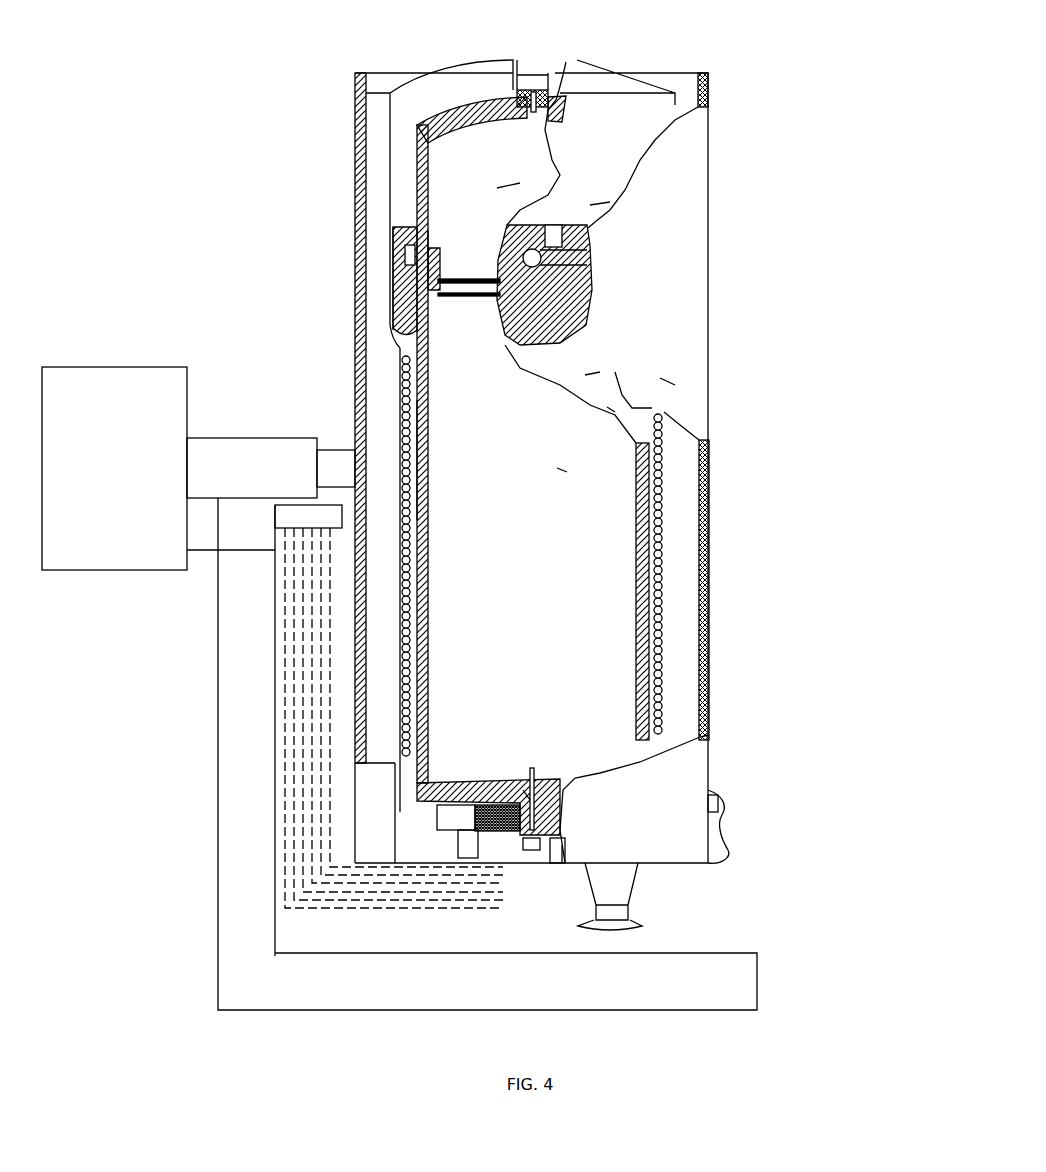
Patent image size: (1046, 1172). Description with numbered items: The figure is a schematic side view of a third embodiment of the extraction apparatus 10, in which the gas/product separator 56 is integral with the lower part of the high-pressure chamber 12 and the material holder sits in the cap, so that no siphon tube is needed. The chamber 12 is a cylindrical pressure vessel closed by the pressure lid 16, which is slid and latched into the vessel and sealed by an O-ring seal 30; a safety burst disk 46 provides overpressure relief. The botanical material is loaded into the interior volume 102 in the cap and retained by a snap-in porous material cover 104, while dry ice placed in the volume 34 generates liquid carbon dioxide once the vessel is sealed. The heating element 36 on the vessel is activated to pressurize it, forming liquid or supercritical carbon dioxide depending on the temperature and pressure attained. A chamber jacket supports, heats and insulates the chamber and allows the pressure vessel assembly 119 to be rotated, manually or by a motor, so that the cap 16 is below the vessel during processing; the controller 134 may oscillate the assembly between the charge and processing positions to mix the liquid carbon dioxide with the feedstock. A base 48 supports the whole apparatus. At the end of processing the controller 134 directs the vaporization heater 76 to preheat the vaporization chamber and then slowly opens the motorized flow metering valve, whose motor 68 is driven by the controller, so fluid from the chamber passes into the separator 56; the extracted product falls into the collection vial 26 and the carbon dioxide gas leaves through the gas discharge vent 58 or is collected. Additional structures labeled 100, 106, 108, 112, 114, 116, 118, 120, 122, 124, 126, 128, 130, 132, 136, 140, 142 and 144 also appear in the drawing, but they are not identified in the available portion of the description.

The extraction apparatus 10 is at (733, 52).
The high-pressure chamber 12 is at (607, 407).
The pressure lid 16 is at (417, 135).
The collection vial 26 is at (644, 888).
The O-ring seal 30 is at (440, 290).
The volume 34 is at (557, 468).
The heating element 36 is at (660, 668).
The safety burst disk 46 is at (523, 100).
The base 48 is at (477, 817).
The gas/product separator 56 is at (723, 820).
The gas discharge vent 58 is at (717, 785).
The motor 68 is at (455, 815).
The heating element 76 is at (470, 840).
The cap 100 is at (448, 138).
The interior volume 102 is at (497, 188).
The snap-in porous material cover 104 is at (468, 278).
The flange 106 is at (437, 297).
The insulation coil 108 is at (413, 184).
The seal ring 112 is at (560, 262).
The inner wall 114 is at (430, 407).
The gasket 116 is at (425, 293).
The housing wall 118 is at (660, 378).
The pressure vessel assembly 119 is at (585, 375).
The outer wall 120 is at (362, 82).
The outer shell 122 is at (683, 538).
The liner 124 is at (650, 605).
The top wall 126 is at (590, 205).
The conduit 128 is at (352, 450).
The duct 130 is at (300, 438).
The controller 132 is at (114, 468).
The controller 134 is at (305, 520).
The wires 136 is at (500, 873).
The pin 140 is at (533, 790).
The connector 142 is at (562, 845).
The sensor 144 is at (523, 790).